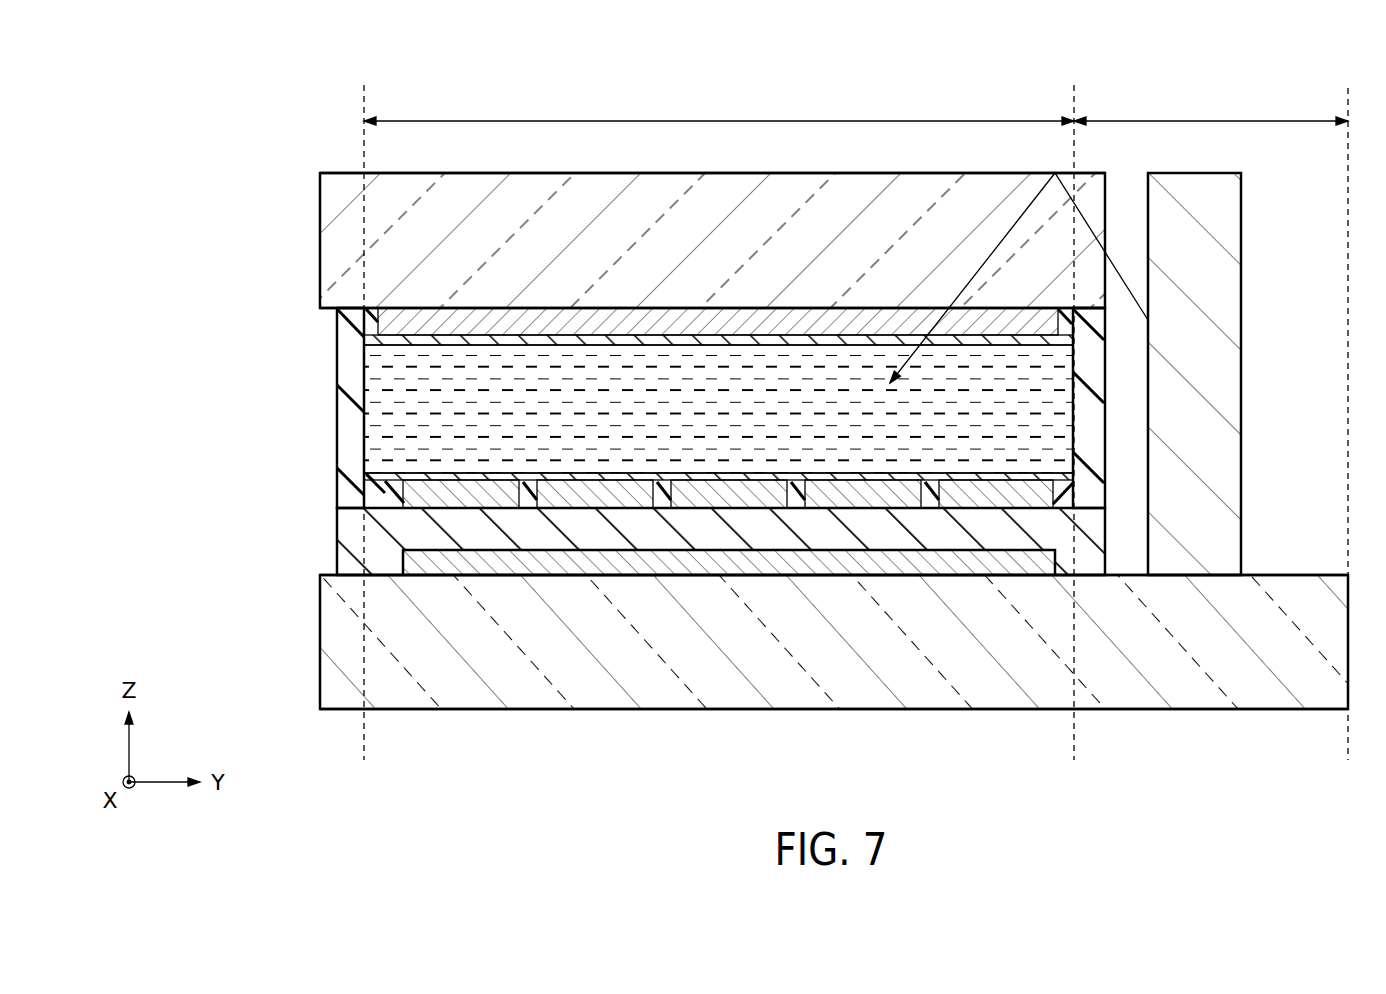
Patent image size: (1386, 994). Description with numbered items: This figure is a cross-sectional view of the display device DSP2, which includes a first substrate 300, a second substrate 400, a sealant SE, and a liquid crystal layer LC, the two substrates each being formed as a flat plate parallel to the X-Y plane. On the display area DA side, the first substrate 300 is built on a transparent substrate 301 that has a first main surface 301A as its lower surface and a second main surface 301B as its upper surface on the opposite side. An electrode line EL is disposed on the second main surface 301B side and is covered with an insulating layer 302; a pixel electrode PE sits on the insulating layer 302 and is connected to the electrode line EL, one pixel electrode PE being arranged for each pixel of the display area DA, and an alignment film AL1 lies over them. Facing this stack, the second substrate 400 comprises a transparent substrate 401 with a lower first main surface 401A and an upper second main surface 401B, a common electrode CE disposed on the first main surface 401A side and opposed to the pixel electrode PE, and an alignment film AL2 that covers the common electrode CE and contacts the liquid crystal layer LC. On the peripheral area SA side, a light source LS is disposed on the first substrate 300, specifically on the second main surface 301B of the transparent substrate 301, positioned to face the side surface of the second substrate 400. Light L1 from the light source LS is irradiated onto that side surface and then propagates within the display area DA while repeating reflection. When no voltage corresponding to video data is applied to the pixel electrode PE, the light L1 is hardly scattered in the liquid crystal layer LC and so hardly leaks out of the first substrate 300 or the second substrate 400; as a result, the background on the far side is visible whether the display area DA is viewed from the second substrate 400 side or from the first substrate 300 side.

The display device DSP2 is at (983, 70).
The display area DA is at (719, 105).
The peripheral area SA is at (1211, 109).
The second substrate 400 is at (215, 298).
The transparent substrate 401 is at (338, 220).
The first main surface 401A is at (497, 300).
The second main surface 401B is at (560, 168).
The common electrode CE is at (373, 320).
The alignment film AL2 is at (377, 340).
The liquid crystal layer LC is at (372, 398).
The light L1 is at (1033, 198).
The light source LS is at (1228, 293).
The sealant SE is at (352, 450).
The alignment film AL1 is at (377, 494).
The pixel electrode PE is at (498, 500).
The insulating layer 302 is at (348, 528).
The electrode line EL is at (749, 563).
The first substrate 300 is at (213, 598).
The transparent substrate 301 is at (338, 652).
The first main surface 301A is at (572, 718).
The second main surface 301B is at (660, 585).